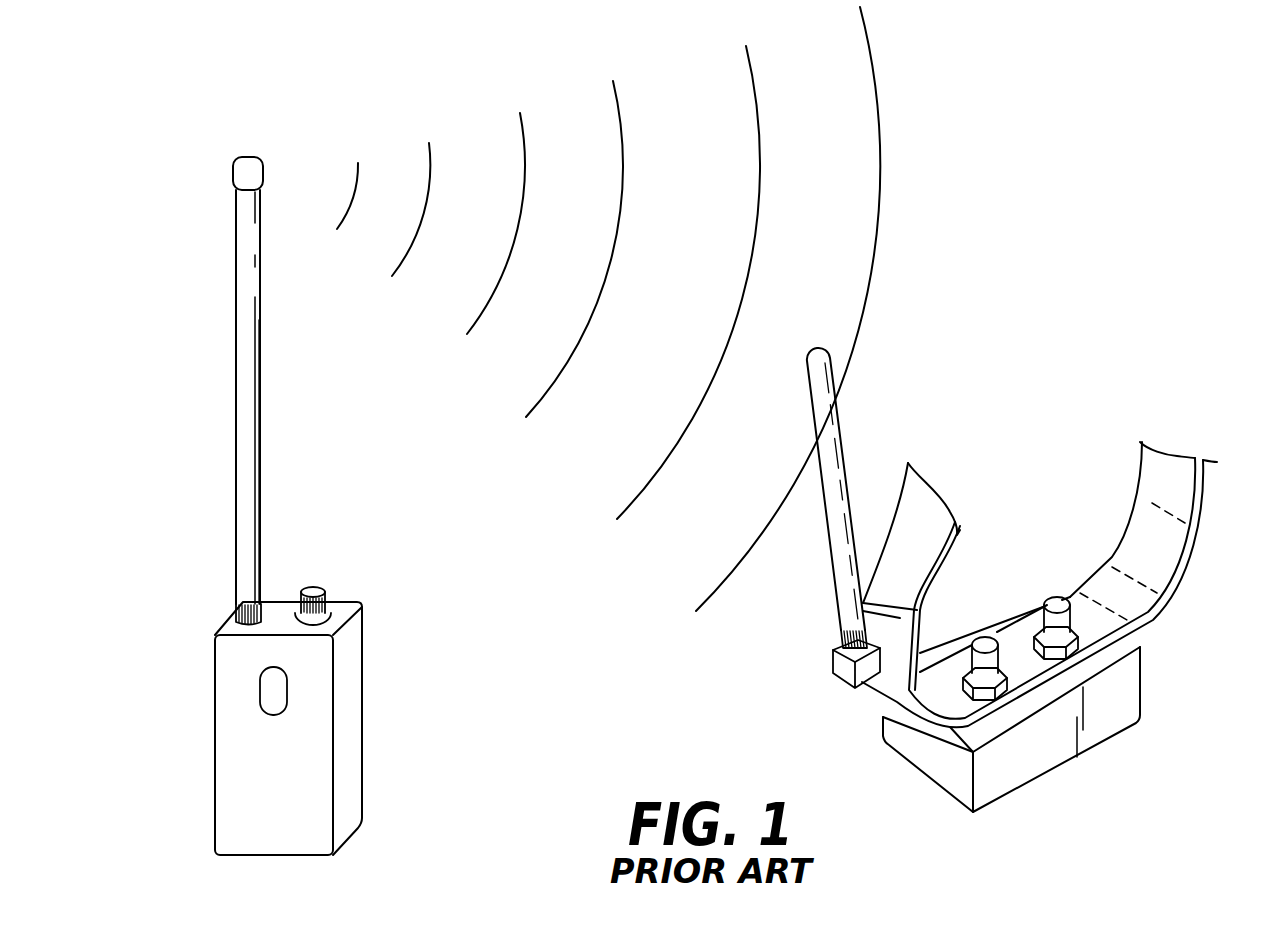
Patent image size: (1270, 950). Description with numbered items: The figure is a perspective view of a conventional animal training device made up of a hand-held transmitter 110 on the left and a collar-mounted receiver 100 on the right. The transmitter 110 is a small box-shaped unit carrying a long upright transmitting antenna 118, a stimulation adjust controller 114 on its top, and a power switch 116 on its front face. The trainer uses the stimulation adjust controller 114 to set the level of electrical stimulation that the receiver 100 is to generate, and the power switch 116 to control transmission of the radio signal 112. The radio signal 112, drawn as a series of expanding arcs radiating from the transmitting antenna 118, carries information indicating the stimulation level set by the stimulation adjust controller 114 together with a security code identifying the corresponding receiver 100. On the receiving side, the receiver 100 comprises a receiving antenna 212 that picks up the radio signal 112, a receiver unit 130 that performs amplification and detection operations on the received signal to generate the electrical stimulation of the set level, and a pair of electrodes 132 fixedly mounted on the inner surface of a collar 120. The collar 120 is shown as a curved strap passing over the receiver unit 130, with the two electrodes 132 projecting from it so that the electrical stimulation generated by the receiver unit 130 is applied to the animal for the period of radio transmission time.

The receiver 100 is at (1032, 594).
The transmitter 110 is at (274, 506).
The radio signal 112 is at (584, 536).
The stimulation adjust controller 114 is at (324, 593).
The power switch 116 is at (272, 716).
The transmitting antenna 118 is at (235, 378).
The collar 120 is at (1182, 567).
The receiver unit 130 is at (1043, 778).
The electrodes 132 is at (1058, 597).
The receiving antenna 212 is at (840, 437).